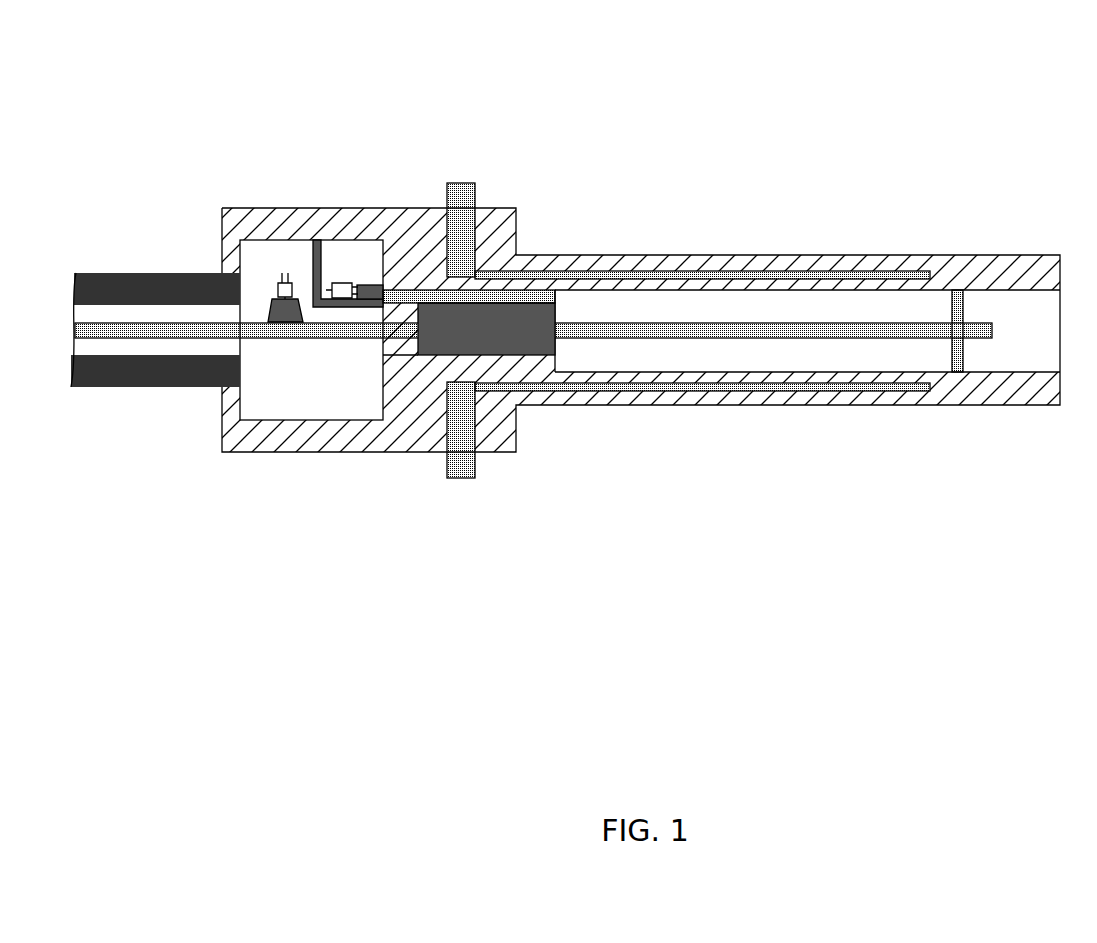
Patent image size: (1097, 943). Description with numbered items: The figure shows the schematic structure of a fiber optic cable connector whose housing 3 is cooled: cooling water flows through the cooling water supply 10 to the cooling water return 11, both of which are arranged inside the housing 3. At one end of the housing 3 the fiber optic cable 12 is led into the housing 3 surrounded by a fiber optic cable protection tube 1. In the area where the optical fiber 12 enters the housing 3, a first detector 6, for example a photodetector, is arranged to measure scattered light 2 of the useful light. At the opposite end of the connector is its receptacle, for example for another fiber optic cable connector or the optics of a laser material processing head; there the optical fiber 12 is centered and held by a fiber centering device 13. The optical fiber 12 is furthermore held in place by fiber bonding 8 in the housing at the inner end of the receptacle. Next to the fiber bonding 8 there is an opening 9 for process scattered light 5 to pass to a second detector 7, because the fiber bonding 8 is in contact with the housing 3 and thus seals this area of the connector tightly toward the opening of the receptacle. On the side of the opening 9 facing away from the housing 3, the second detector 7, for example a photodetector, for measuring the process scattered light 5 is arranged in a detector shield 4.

The fiber optic cable protection tube 1 is at (105, 278).
The scattered light 2 is at (275, 322).
The housing 3 is at (265, 208).
The detector shield 4 is at (338, 302).
The process scattered light 5 is at (368, 292).
The first detector 6 is at (287, 274).
The second detector 7 is at (347, 279).
The fiber bonding 8 is at (440, 355).
The opening 9 is at (412, 290).
The cooling water supply 10 is at (470, 193).
The cooling water return 11 is at (467, 433).
The fiber optic cable 12 is at (747, 335).
The fiber centering device 13 is at (962, 357).